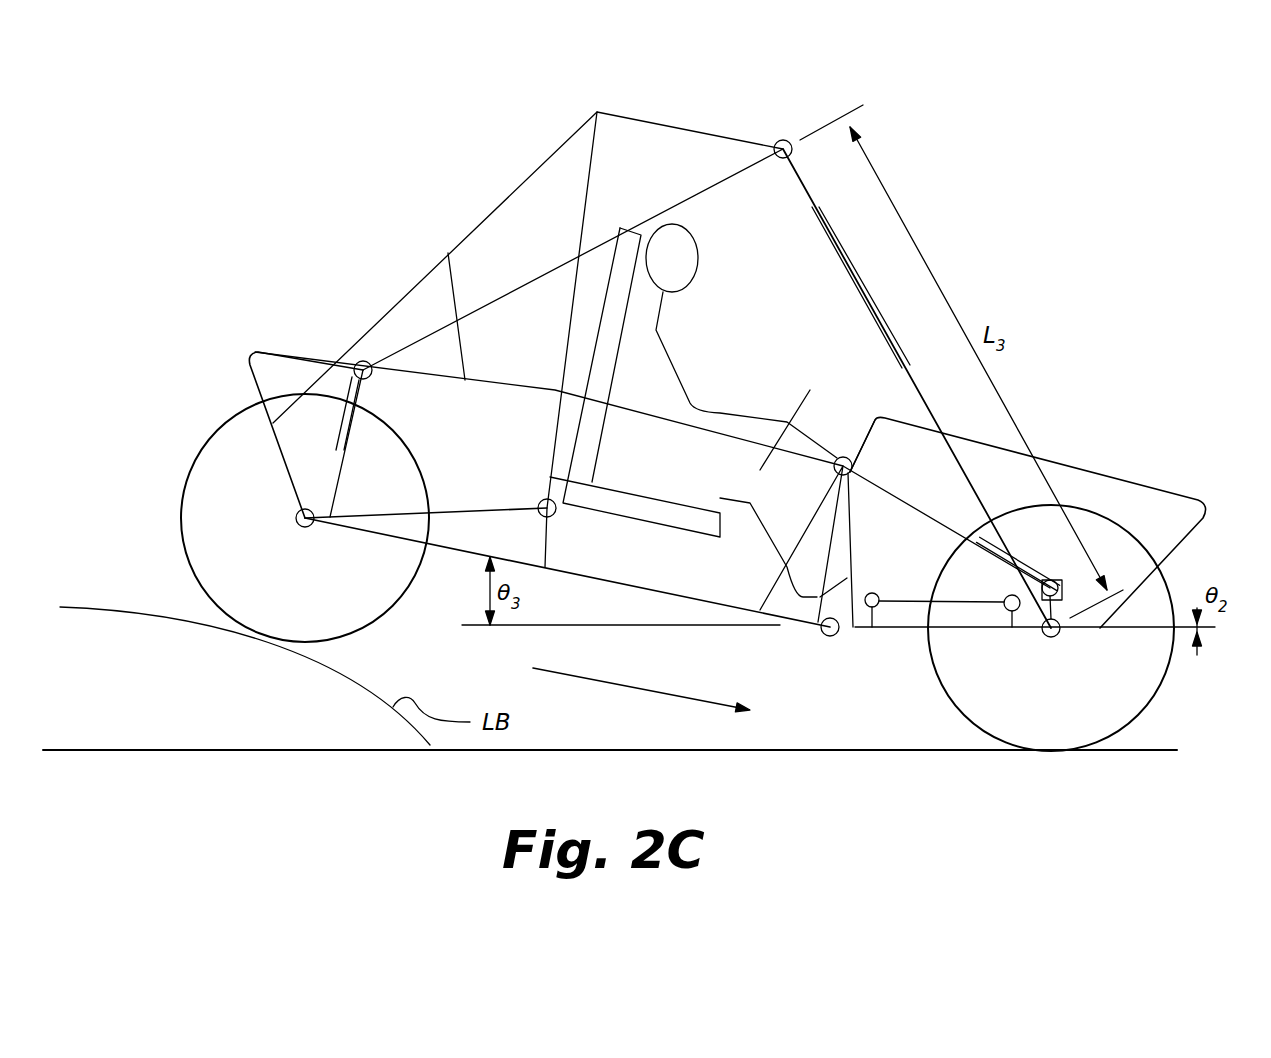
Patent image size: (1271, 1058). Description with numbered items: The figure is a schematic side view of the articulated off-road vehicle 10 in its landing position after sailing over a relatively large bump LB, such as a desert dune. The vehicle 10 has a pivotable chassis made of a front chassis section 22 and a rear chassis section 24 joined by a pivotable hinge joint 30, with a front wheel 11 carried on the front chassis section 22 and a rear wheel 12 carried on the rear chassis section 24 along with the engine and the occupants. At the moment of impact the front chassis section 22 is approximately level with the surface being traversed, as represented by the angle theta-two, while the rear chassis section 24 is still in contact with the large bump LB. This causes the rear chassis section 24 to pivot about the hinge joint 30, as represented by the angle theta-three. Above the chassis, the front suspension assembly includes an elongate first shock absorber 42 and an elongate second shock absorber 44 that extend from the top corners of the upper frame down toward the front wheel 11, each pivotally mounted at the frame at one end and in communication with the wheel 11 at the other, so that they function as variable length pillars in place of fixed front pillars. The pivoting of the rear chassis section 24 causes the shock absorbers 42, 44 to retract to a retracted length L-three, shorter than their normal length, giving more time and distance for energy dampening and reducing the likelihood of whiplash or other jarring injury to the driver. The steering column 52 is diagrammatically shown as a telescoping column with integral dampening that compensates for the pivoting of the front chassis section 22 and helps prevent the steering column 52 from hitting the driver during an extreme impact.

The articulated off-road vehicle 10 is at (240, 163).
The front wheel 11 is at (940, 688).
The rear wheel 12 is at (182, 494).
The front chassis section 22 is at (852, 652).
The rear chassis section 24 is at (445, 577).
The hinge joint 30 is at (820, 638).
The first shock absorber 42 is at (824, 240).
The second shock absorber 44 is at (861, 287).
The steering column 52 is at (893, 490).